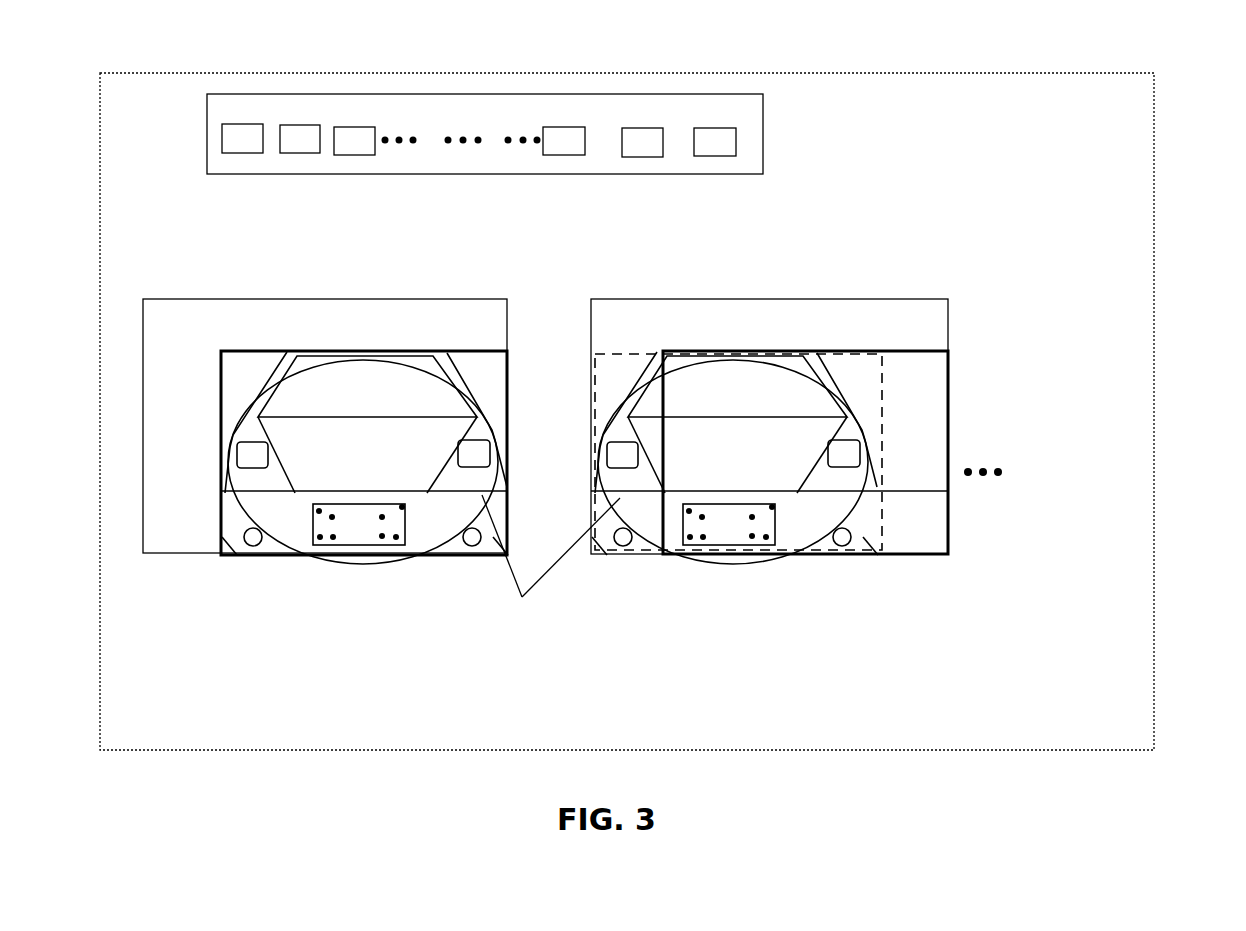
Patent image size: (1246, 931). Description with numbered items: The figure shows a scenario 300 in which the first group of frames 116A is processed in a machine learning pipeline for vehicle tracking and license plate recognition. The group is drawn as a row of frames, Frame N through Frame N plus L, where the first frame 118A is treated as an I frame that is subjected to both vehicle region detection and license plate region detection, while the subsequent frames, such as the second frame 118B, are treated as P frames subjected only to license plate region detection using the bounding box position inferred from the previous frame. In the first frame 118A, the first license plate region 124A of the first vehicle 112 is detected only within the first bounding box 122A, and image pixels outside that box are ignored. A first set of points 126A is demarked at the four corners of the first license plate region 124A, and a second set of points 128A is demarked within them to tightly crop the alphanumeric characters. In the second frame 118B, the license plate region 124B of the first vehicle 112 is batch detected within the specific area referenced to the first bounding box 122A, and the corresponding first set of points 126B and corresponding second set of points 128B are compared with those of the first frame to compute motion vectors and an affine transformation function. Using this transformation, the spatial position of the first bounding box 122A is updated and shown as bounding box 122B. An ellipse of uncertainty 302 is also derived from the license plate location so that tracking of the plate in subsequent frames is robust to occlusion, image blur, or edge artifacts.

The scenario 300 is at (1184, 60).
The first group of frames 116A is at (763, 147).
The first frame 118A is at (248, 153).
The second frame 118B is at (307, 155).
The first bounding box 122A is at (247, 350).
The bounding box 122B is at (880, 413).
The first vehicle 112 is at (452, 365).
The first license plate region 124A is at (407, 543).
The first set of points 126A is at (360, 562).
The second set of points 128A is at (303, 567).
The license plate region 124B is at (777, 543).
The corresponding first set of points 126B is at (730, 562).
The corresponding second set of points 128B is at (673, 567).
The ellipse of uncertainty 302 is at (551, 559).